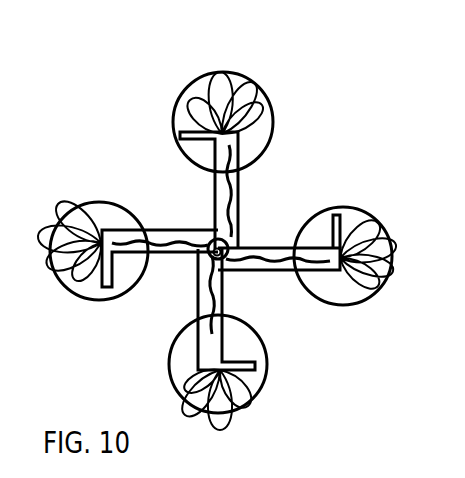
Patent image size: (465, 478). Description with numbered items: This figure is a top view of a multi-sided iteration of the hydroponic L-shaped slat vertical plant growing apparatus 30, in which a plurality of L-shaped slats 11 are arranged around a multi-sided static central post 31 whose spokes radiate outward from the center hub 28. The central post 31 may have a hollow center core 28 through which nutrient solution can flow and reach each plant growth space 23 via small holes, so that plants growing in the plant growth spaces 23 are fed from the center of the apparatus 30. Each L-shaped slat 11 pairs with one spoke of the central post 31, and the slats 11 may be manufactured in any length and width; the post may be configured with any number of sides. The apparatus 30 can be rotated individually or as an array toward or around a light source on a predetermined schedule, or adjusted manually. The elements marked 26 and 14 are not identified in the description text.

The hydroponic L-shaped slat vertical plant growing apparatus 30 is at (137, 104).
The multi-sided central post 31 is at (272, 245).
The plant growth space 23 is at (210, 228).
The L-shaped slat 11 is at (345, 217).
The wires 26 is at (197, 253).
The hollow center core 28 is at (219, 278).
The propeller guard 14 is at (176, 122).